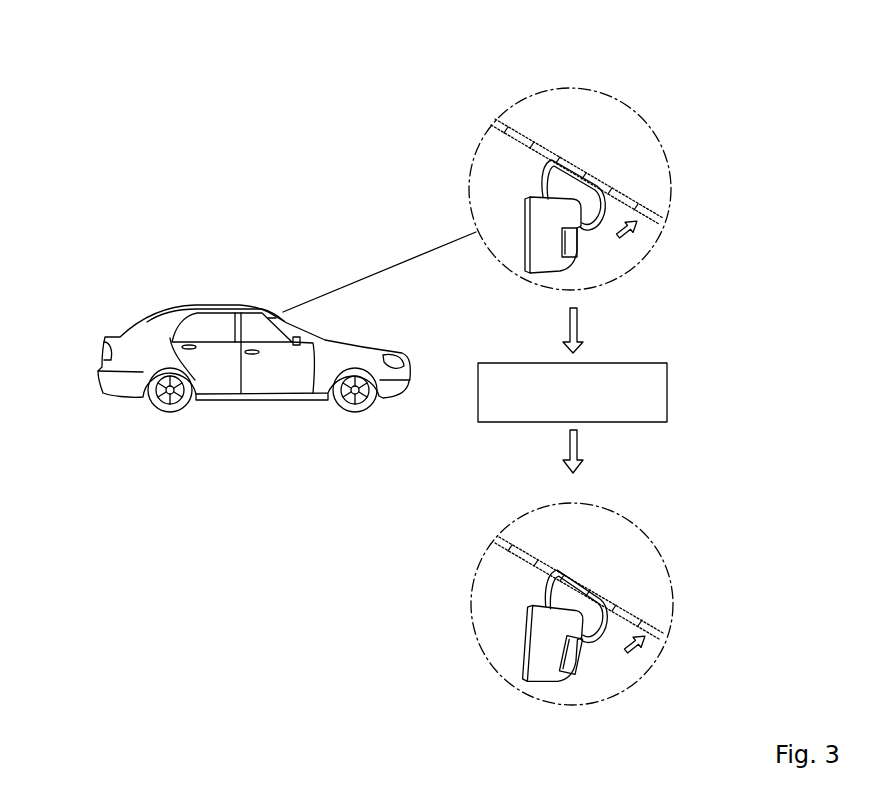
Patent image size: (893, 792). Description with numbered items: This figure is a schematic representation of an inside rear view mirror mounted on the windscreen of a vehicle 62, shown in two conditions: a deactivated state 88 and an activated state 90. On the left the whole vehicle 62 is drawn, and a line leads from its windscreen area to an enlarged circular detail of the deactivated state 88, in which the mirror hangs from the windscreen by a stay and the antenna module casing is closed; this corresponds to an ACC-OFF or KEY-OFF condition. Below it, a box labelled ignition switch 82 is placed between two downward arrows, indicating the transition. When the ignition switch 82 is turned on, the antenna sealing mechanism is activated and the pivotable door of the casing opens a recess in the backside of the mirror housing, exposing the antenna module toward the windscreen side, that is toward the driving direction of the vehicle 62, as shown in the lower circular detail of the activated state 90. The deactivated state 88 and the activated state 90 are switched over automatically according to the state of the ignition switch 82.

The vehicle 62 is at (134, 273).
The ignition switch 82 is at (667, 392).
The deactivated state 88 is at (631, 108).
The activated state 90 is at (650, 538).